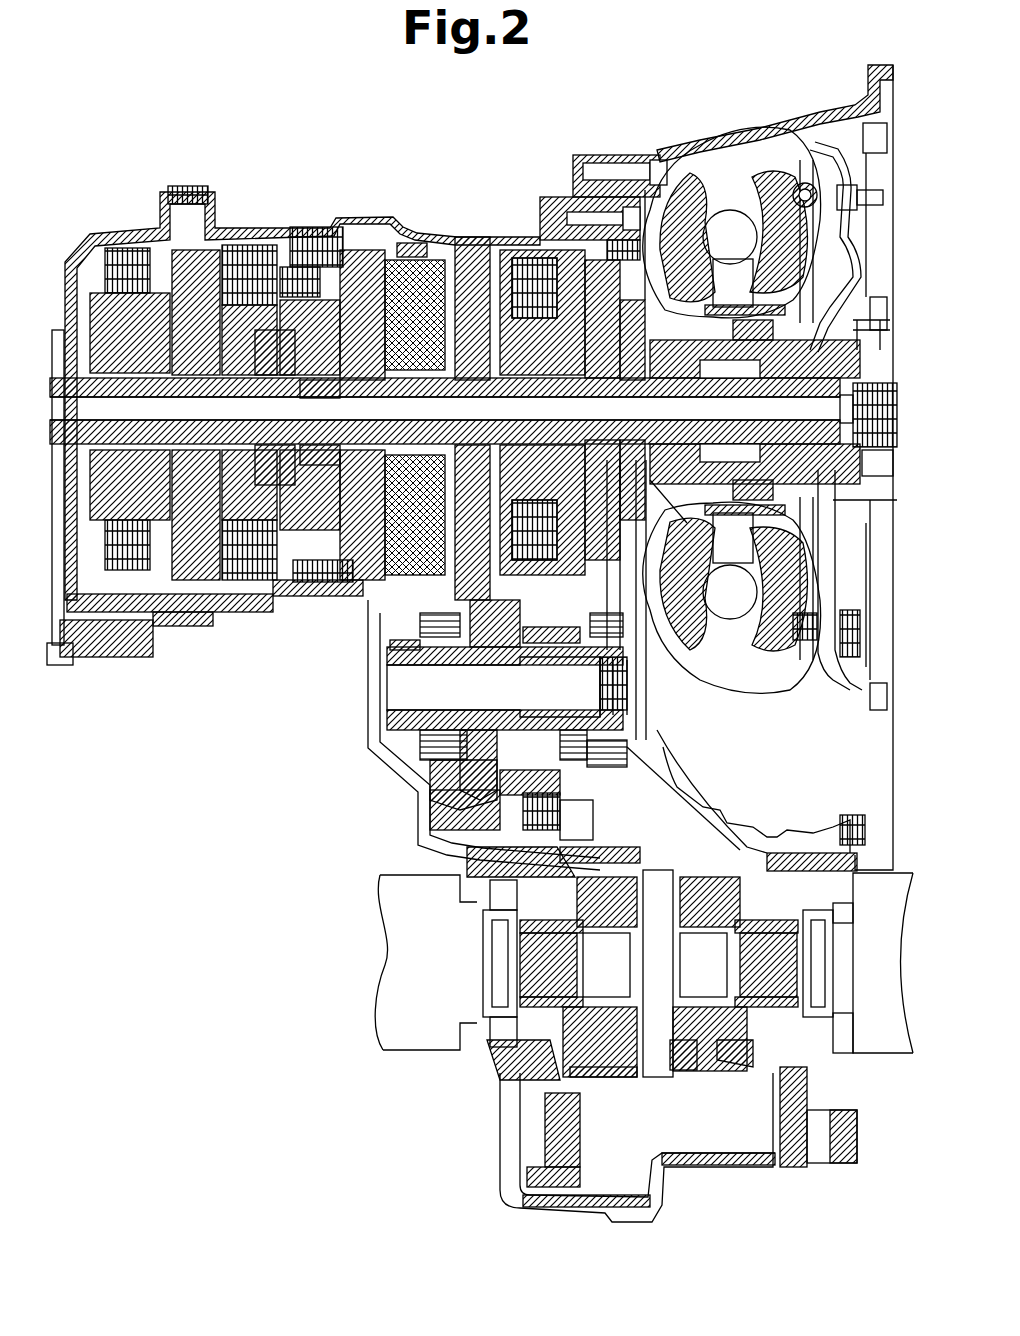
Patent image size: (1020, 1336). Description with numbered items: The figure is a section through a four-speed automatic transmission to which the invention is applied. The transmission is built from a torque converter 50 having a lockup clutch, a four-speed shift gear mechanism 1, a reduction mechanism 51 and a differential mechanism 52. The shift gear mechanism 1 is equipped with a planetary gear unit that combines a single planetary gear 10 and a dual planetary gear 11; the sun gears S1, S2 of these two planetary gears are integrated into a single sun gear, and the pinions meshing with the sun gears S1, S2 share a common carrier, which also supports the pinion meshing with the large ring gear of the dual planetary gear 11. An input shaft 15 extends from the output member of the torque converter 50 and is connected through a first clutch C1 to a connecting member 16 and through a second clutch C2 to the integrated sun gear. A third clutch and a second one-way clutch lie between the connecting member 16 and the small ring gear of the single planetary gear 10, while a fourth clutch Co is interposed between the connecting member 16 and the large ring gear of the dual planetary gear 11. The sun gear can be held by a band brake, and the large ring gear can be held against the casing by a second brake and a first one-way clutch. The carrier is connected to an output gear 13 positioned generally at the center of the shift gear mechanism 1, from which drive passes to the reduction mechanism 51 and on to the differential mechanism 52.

The four-speed shift gear mechanism 1 is at (70, 233).
The first clutch C1 is at (122, 250).
The connecting member 16 is at (196, 250).
The fourth clutch Co is at (262, 248).
The single planetary gear 10 is at (275, 262).
The dual planetary gear 11 is at (350, 252).
The output gear 13 is at (478, 290).
The second clutch C2 is at (518, 260).
The input shaft 15 is at (198, 413).
The sun gear S1 is at (275, 413).
The sun gear S2 is at (322, 452).
The torque converter 50 is at (745, 155).
The reduction mechanism 51 is at (368, 748).
The differential mechanism 52 is at (547, 1040).